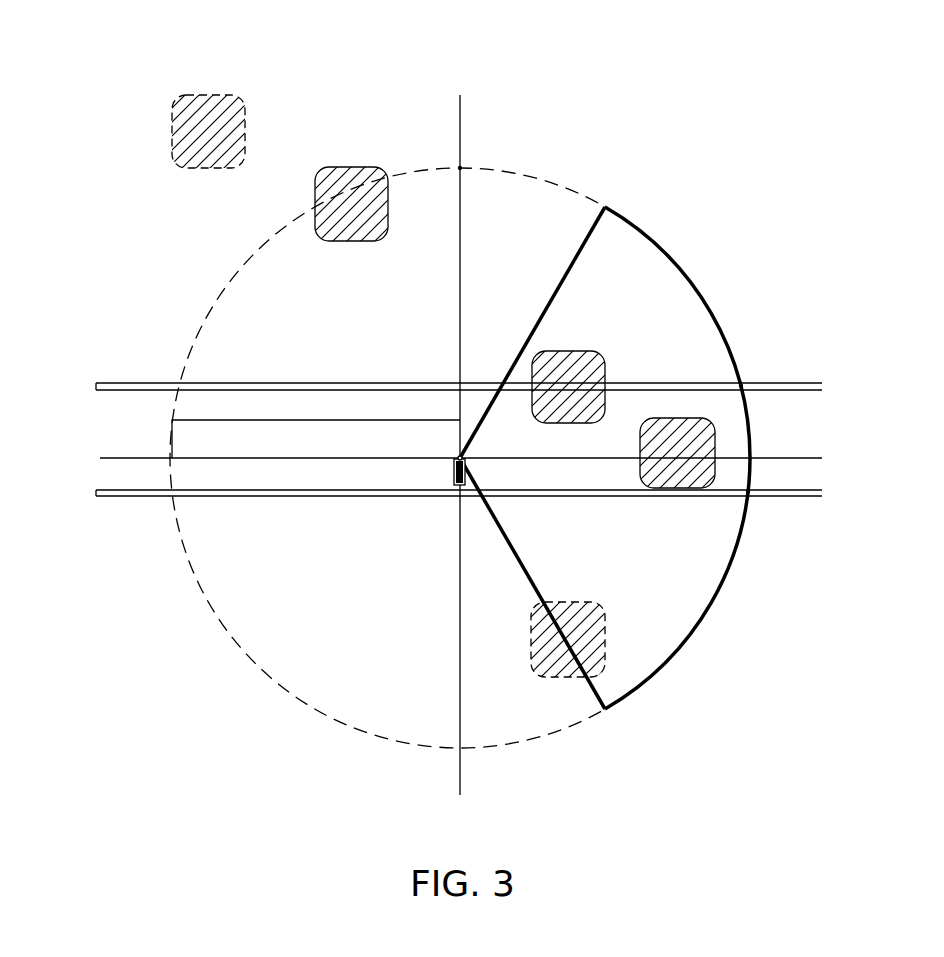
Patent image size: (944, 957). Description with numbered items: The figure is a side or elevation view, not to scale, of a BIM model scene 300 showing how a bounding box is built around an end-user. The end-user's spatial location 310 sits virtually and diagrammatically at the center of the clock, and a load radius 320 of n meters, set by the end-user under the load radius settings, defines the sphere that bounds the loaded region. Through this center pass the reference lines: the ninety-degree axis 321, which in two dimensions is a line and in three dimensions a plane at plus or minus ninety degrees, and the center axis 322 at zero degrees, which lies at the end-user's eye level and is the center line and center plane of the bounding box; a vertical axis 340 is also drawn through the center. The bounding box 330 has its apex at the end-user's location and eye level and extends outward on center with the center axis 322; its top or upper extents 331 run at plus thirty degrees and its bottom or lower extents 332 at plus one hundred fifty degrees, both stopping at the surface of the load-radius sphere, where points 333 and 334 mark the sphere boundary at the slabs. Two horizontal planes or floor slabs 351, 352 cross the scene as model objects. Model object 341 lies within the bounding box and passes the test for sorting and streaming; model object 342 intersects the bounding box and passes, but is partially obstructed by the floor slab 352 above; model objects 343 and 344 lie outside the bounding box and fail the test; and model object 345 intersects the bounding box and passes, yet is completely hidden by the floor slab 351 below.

The sensing environment diagram 300 is at (128, 70).
The end-user's spatial location 310 is at (452, 467).
The load radius 320 is at (174, 420).
The 90° axis 321 is at (460, 168).
The center axis 322 is at (822, 458).
The bounding box 330 is at (565, 280).
The top or upper extents of the bounding box 331 is at (605, 207).
The bottom or lower extents of the bounding box 332 is at (605, 709).
The intersection of range circle with upper lane line 333 is at (743, 386).
The intersection of range circle with lower lane line 334 is at (749, 493).
The vertical reference axis 340 is at (460, 330).
The model object contained within the bounding box 341 is at (640, 475).
The model object intersecting the bounding box 342 is at (562, 424).
The model object outside of the bounding box 343 is at (350, 241).
The model object outside of the bounding box 344 is at (208, 168).
The model object intersecting the bounding box 345 is at (606, 640).
The model object of a horizontal plane or floor slab 351 is at (96, 491).
The model object of a horizontal plane or floor slab 352 is at (96, 385).